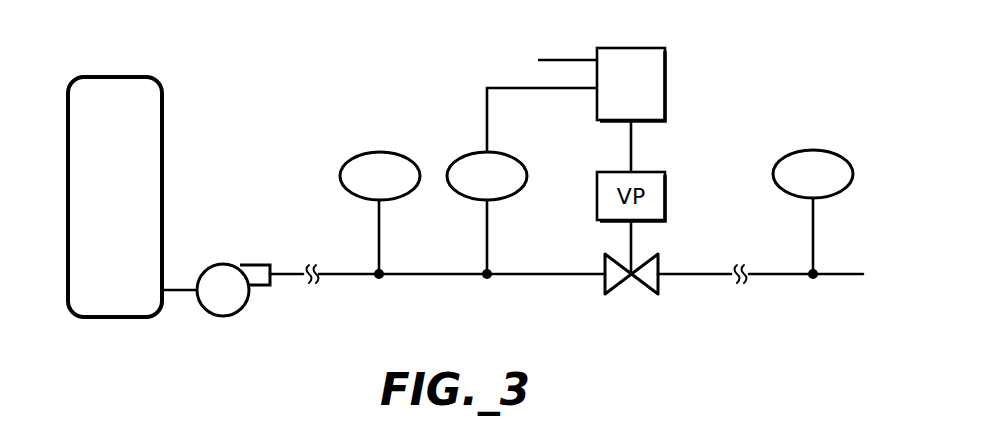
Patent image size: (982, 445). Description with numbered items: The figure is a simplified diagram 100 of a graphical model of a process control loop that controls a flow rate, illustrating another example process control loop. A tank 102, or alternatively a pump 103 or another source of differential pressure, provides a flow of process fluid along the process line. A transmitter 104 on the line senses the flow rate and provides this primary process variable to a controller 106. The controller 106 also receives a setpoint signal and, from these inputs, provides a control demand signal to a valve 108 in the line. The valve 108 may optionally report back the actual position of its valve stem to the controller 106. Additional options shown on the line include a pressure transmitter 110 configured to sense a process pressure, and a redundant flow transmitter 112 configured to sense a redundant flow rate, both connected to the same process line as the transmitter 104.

The simplified diagram 100 is at (765, 312).
The tank 102 is at (162, 122).
The pump 103 is at (217, 264).
The transmitter 104 is at (477, 152).
The controller 106 is at (667, 70).
The valve 108 is at (603, 278).
The pressure transmitter 110 is at (370, 152).
The redundant flow transmitter 112 is at (813, 148).